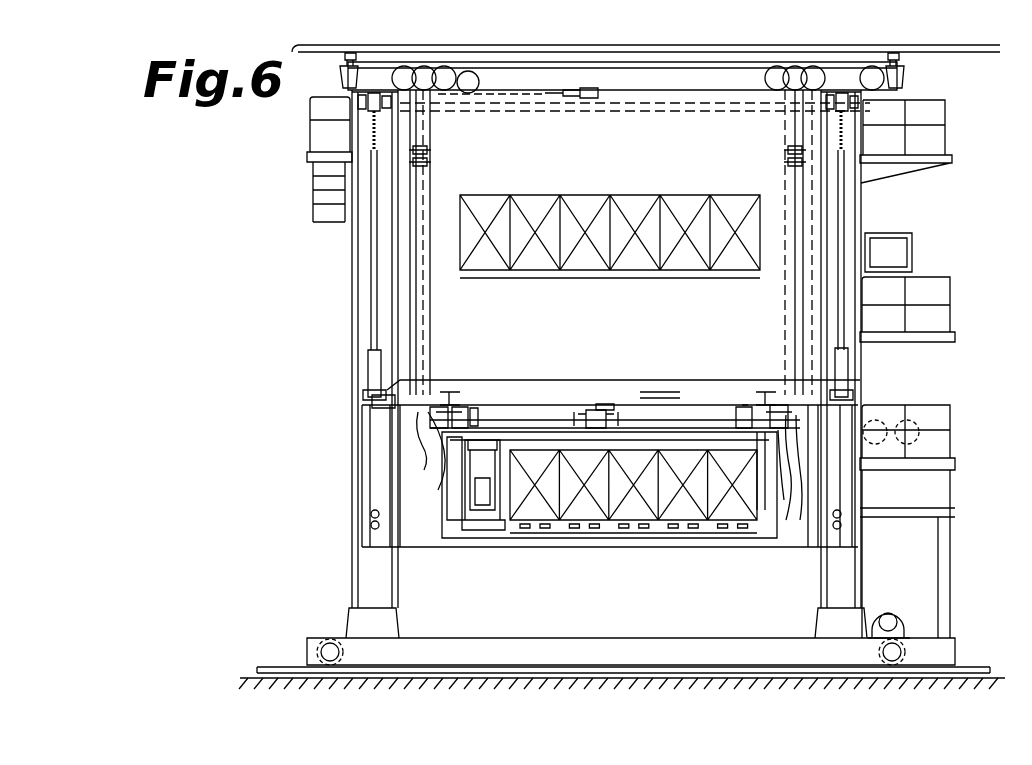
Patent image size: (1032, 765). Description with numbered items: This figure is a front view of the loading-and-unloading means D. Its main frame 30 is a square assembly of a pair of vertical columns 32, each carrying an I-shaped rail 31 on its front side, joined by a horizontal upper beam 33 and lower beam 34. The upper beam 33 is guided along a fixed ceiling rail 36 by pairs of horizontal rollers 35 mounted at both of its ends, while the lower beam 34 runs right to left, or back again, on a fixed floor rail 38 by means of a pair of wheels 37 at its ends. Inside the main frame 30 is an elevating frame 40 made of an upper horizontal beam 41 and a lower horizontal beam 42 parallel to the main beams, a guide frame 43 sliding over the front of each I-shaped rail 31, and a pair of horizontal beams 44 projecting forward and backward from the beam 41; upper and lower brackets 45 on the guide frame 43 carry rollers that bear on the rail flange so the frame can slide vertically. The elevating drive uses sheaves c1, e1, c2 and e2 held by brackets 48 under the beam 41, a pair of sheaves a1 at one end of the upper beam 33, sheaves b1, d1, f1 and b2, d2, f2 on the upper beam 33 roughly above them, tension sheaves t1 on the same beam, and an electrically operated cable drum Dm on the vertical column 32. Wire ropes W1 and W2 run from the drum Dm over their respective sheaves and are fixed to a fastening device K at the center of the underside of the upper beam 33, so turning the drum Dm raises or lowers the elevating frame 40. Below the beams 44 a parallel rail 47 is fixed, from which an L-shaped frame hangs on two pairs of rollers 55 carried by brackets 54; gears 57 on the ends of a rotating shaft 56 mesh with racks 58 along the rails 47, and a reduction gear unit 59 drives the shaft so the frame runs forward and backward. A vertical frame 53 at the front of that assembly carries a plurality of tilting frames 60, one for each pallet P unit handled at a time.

The main frame 30 is at (345, 329).
The I-shaped rail 31 is at (378, 372).
The vertical column 32 is at (368, 345).
The upper beam 33 is at (656, 62).
The lower beam 34 is at (590, 660).
The horizontal roller 35 is at (352, 54).
The ceiling rail 36 is at (326, 52).
The wheel 37 is at (332, 666).
The floor rail 38 is at (450, 676).
The elevating frame 40 is at (712, 376).
The upper horizontal beam 41 is at (656, 392).
The lower horizontal beam 42 is at (641, 548).
The guide frame 43 is at (366, 472).
The horizontal beam 44 is at (447, 392).
The bracket 45 is at (366, 520).
The parallel rail 47 is at (385, 405).
The bracket 48 is at (784, 500).
The vertical frame 53 is at (548, 402).
The bracket 54 is at (832, 395).
The roller 55 is at (738, 405).
The rotating shaft 56 is at (594, 408).
The gear 57 is at (470, 407).
The rack 58 is at (478, 398).
The reduction gear unit 59 is at (608, 404).
The tilting frame 60 is at (452, 530).
The pallet P is at (540, 540).
The loading-and-unloading means D is at (328, 236).
The rotary cable drum Dm is at (884, 432).
The fastening device K is at (585, 88).
The wire rope W1 is at (912, 206).
The wire rope W2 is at (430, 176).
The rotary sheave f1 is at (775, 68).
The rotary sheave f2 is at (405, 66).
The rotary sheave d1 is at (794, 66).
The rotary sheave d2 is at (427, 66).
The rotary sheave b1 is at (811, 66).
The rotary sheave b2 is at (446, 66).
The rotary sheave a1 is at (872, 66).
The rotary tension sheave t1 is at (472, 72).
The rotatable sheave e1 is at (786, 520).
The rotatable sheave e2 is at (420, 446).
The rotatable sheave c1 is at (800, 520).
The rotatable sheave c2 is at (427, 463).